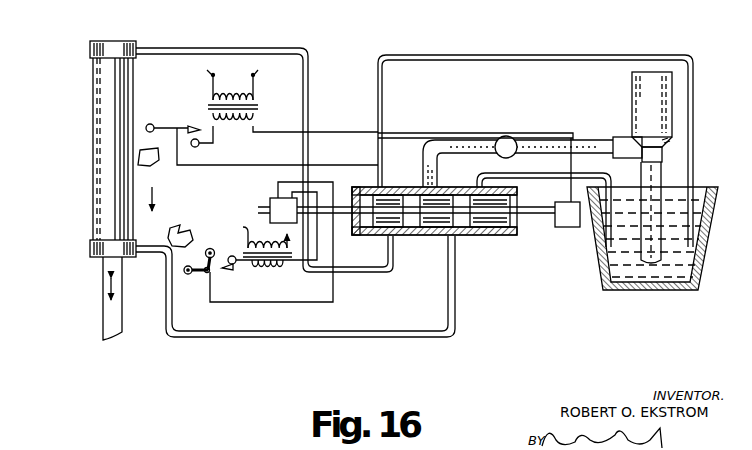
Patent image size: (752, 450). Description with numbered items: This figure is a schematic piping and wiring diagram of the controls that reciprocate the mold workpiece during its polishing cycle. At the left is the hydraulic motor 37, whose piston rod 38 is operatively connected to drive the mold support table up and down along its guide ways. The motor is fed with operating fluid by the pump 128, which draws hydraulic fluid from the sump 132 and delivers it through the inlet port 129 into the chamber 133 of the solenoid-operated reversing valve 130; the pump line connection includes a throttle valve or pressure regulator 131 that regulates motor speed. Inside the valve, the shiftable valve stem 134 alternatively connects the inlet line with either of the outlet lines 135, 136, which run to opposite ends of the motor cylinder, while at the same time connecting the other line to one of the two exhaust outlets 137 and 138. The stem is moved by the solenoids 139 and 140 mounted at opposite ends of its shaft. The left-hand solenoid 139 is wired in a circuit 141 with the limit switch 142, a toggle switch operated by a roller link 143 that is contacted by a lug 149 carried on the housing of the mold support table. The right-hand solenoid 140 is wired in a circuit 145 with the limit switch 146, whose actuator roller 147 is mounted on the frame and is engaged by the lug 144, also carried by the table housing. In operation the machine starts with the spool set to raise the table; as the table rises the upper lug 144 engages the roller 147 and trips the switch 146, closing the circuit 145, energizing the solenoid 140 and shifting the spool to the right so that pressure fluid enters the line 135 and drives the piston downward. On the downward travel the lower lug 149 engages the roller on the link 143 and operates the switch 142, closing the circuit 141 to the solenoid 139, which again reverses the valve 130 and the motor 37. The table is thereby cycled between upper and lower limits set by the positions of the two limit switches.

The motor 37 is at (100, 154).
The piston rod 38 is at (103, 325).
The pump 128 is at (652, 167).
The inlet port 129 is at (425, 186).
The solenoid-operated reversing valve 130 is at (483, 237).
The throttle valve or pressure regulator 131 is at (498, 136).
The sump 132 is at (600, 284).
The chamber 133 is at (437, 237).
The valve stem 134 is at (468, 237).
The outlet line 135 is at (351, 273).
The outlet line 136 is at (444, 337).
The exhaust outlet 137 is at (620, 55).
The exhaust outlet 138 is at (608, 176).
The left-hand solenoid 139 is at (272, 200).
The right-hand solenoid 140 is at (565, 228).
The circuit 141 is at (294, 267).
The limit switch 142 is at (214, 274).
The roller link 143 is at (198, 222).
The lug 144 is at (152, 166).
The circuit 145 is at (380, 132).
The limit switch 146 is at (187, 124).
The actuator roller 147 is at (166, 111).
The lug 149 is at (171, 205).